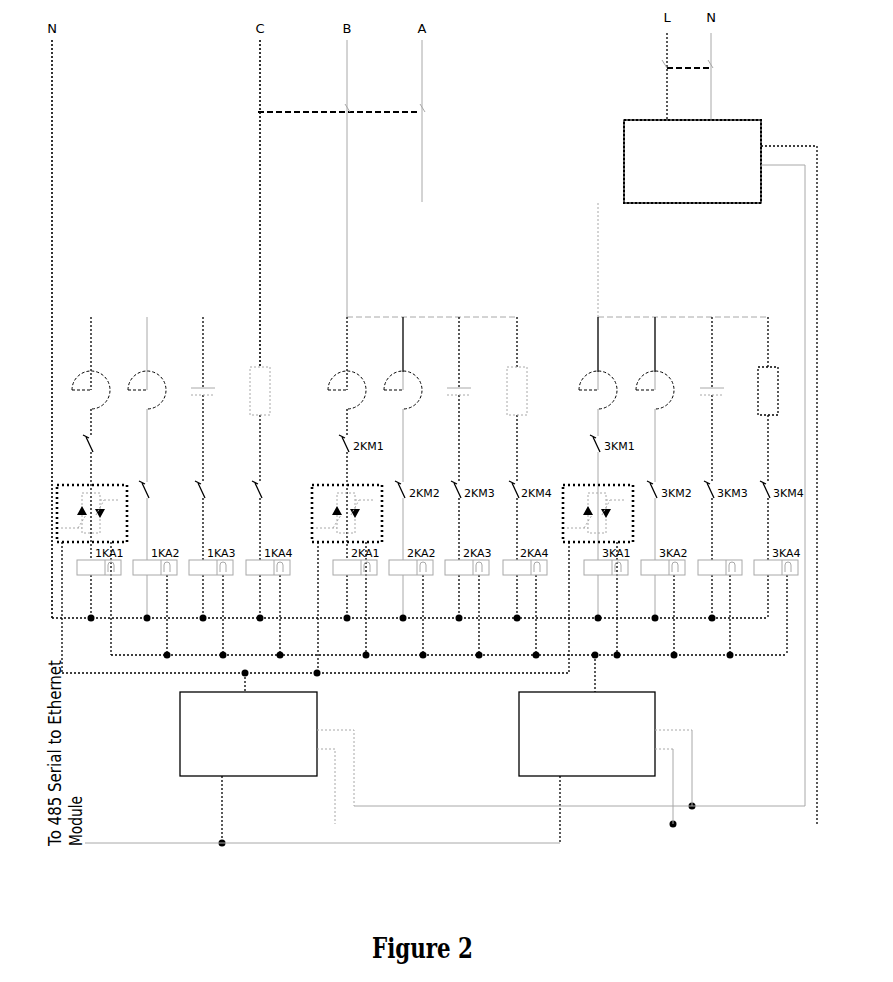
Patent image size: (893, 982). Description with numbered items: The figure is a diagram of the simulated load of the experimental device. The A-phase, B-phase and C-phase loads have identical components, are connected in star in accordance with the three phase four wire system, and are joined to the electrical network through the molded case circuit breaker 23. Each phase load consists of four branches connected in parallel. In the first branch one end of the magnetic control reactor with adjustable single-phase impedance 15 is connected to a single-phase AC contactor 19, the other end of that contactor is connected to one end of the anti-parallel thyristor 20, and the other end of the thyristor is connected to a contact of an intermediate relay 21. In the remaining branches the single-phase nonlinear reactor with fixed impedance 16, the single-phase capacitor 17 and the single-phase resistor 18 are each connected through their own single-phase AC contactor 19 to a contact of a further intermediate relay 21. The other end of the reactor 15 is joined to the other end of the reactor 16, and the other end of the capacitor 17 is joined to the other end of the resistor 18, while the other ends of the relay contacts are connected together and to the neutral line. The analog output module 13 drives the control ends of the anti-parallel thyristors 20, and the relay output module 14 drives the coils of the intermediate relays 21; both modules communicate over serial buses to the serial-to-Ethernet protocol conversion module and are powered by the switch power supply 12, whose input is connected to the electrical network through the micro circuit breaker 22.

The switch power supply 12 is at (692, 161).
The analog output module 13 is at (248, 734).
The relay output module 14 is at (587, 734).
The magnetic control reactor with adjustable single-phase impedance 15 is at (90, 372).
The single-phase nonlinear reactor with fixed impedance 16 is at (144, 372).
The single-phase capacitor 17 is at (195, 379).
The single-phase resistor 18 is at (249, 381).
The single-phase AC contactor 19 is at (262, 482).
The anti-parallel thyristor 20 is at (578, 483).
The intermediate relay 21 is at (703, 559).
The micro circuit breaker 22 is at (655, 83).
The molded case circuit breaker 23 is at (258, 111).